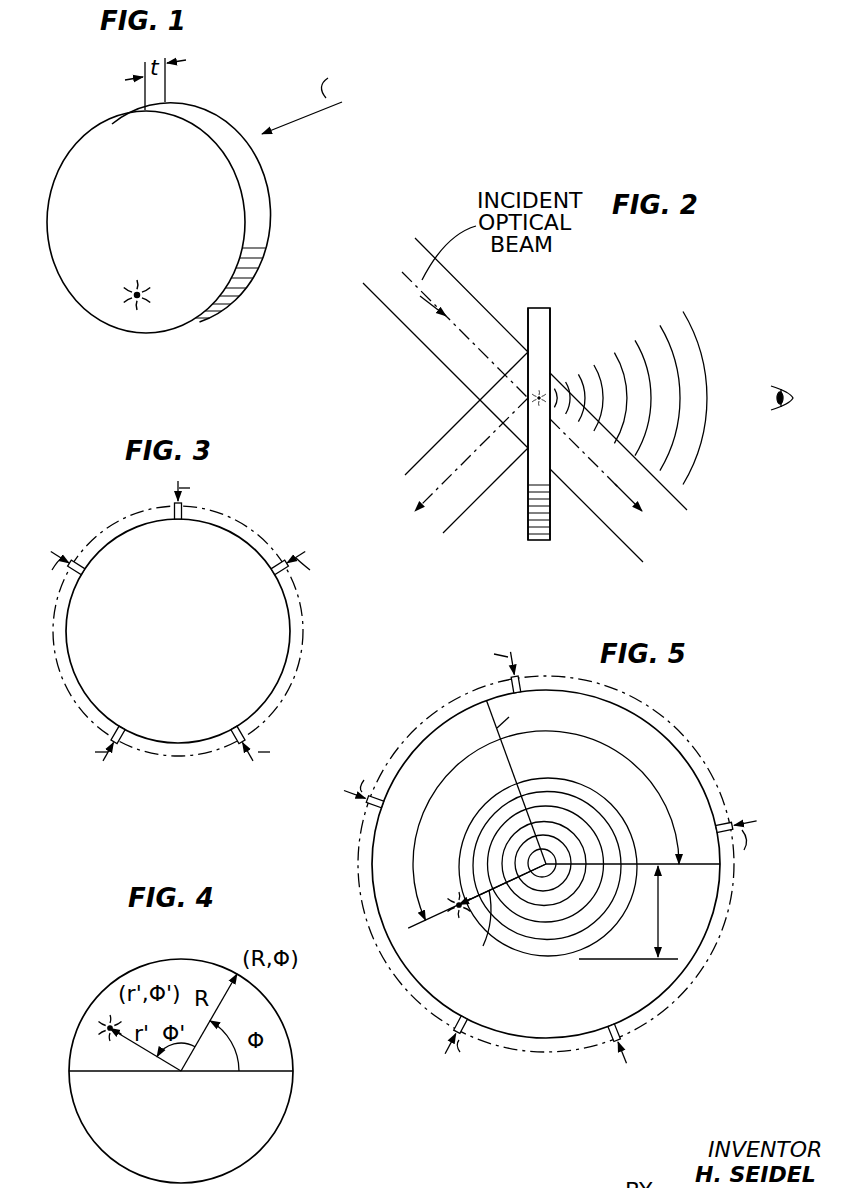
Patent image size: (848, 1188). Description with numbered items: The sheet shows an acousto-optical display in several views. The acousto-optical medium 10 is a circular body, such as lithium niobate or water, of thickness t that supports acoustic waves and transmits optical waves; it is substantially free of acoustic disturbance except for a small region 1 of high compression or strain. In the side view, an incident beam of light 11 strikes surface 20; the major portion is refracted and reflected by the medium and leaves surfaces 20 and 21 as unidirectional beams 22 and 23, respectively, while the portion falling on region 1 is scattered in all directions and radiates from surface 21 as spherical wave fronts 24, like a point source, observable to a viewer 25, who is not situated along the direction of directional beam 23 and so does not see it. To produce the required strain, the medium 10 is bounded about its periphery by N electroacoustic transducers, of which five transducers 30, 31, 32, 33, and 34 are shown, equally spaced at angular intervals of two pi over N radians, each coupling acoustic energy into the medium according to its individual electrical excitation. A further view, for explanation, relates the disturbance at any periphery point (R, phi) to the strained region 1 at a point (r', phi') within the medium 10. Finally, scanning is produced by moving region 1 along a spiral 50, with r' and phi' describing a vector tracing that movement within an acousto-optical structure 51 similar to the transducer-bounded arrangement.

In FIG. 1, the region of high strain 1 is at (126, 297).
In FIG. 2, the region of high strain 1 is at (536, 395).
In FIG. 4, the region of high strain 1 is at (102, 1027).
In FIG. 5, the region of high strain 1 is at (456, 901).
In FIG. 1, the acousto-optical medium 10 is at (258, 200).
In FIG. 2, the acousto-optical medium 10 is at (551, 530).
In FIG. 3, the acousto-optical medium 10 is at (282, 655).
In FIG. 4, the acousto-optical medium 10 is at (170, 958).
In FIG. 5, the acousto-optical medium 10 is at (690, 777).
In FIG. 1, the incident beam of light 11 is at (312, 122).
In FIG. 2, the incident beam of light 11 is at (445, 343).
In FIG. 2, the surface 20 is at (527, 314).
In FIG. 2, the surface 21 is at (551, 328).
In FIG. 2, the unidirectional beam 22 is at (437, 486).
In FIG. 2, the unidirectional beam 23 is at (621, 500).
In FIG. 2, the spherical wave fronts 24 is at (661, 325).
In FIG. 2, the viewer 25 is at (777, 386).
In FIG. 3, the electroacoustic transducer 30 is at (173, 507).
In FIG. 5, the electroacoustic transducer 30 is at (520, 684).
In FIG. 3, the electroacoustic transducer 31 is at (78, 562).
In FIG. 5, the electroacoustic transducer 31 is at (367, 812).
In FIG. 3, the electroacoustic transducer 32 is at (124, 743).
In FIG. 5, the electroacoustic transducer 32 is at (455, 1022).
In FIG. 3, the electroacoustic transducer 33 is at (232, 743).
In FIG. 5, the electroacoustic transducer 33 is at (622, 1031).
In FIG. 3, the electroacoustic transducer 34 is at (278, 560).
In FIG. 5, the electroacoustic transducer 34 is at (724, 823).
In FIG. 5, the spiral 50 is at (616, 823).
In FIG. 5, the acousto-optical structure 51 is at (680, 711).